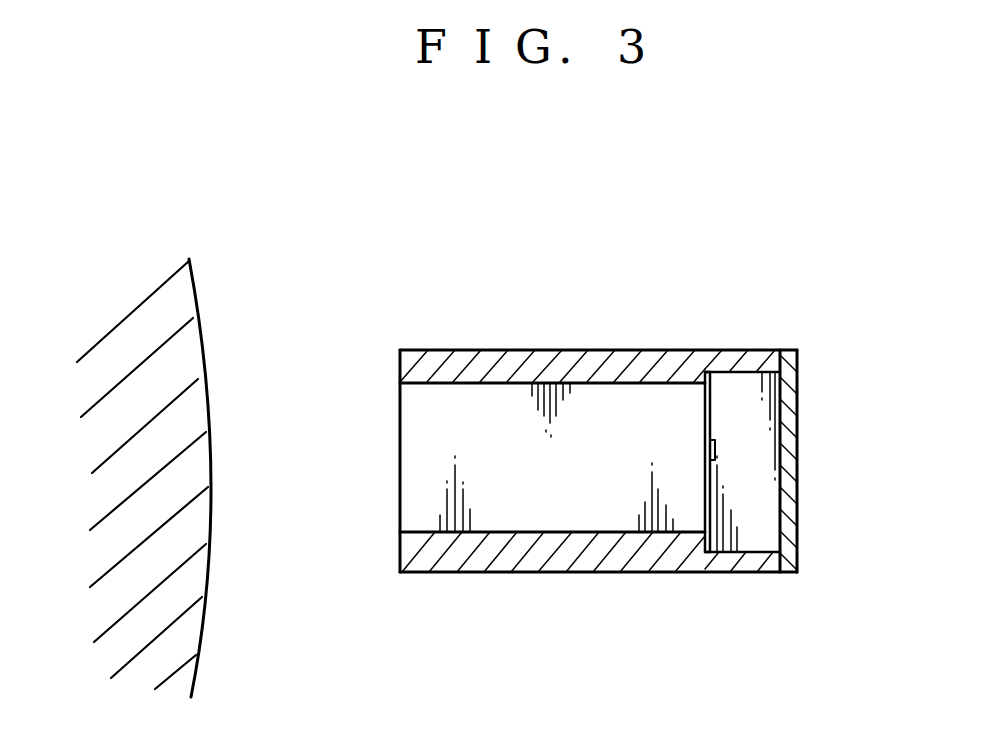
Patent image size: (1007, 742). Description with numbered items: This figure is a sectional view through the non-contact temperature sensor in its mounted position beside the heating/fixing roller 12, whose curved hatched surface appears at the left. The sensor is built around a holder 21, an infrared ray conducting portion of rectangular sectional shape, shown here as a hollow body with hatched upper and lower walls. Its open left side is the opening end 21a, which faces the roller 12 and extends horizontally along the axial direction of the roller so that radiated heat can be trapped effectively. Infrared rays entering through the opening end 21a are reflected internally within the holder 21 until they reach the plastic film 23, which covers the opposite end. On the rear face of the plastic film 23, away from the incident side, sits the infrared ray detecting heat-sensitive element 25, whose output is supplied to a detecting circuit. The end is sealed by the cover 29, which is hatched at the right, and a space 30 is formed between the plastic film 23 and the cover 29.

The heating/fixing roller 12 is at (181, 633).
The holder 21 is at (488, 357).
The opening end 21a is at (412, 472).
The plastic film 23 is at (710, 390).
The infrared ray detecting heat-sensitive element 25 is at (713, 457).
The cover 29 is at (788, 473).
The space 30 is at (757, 517).